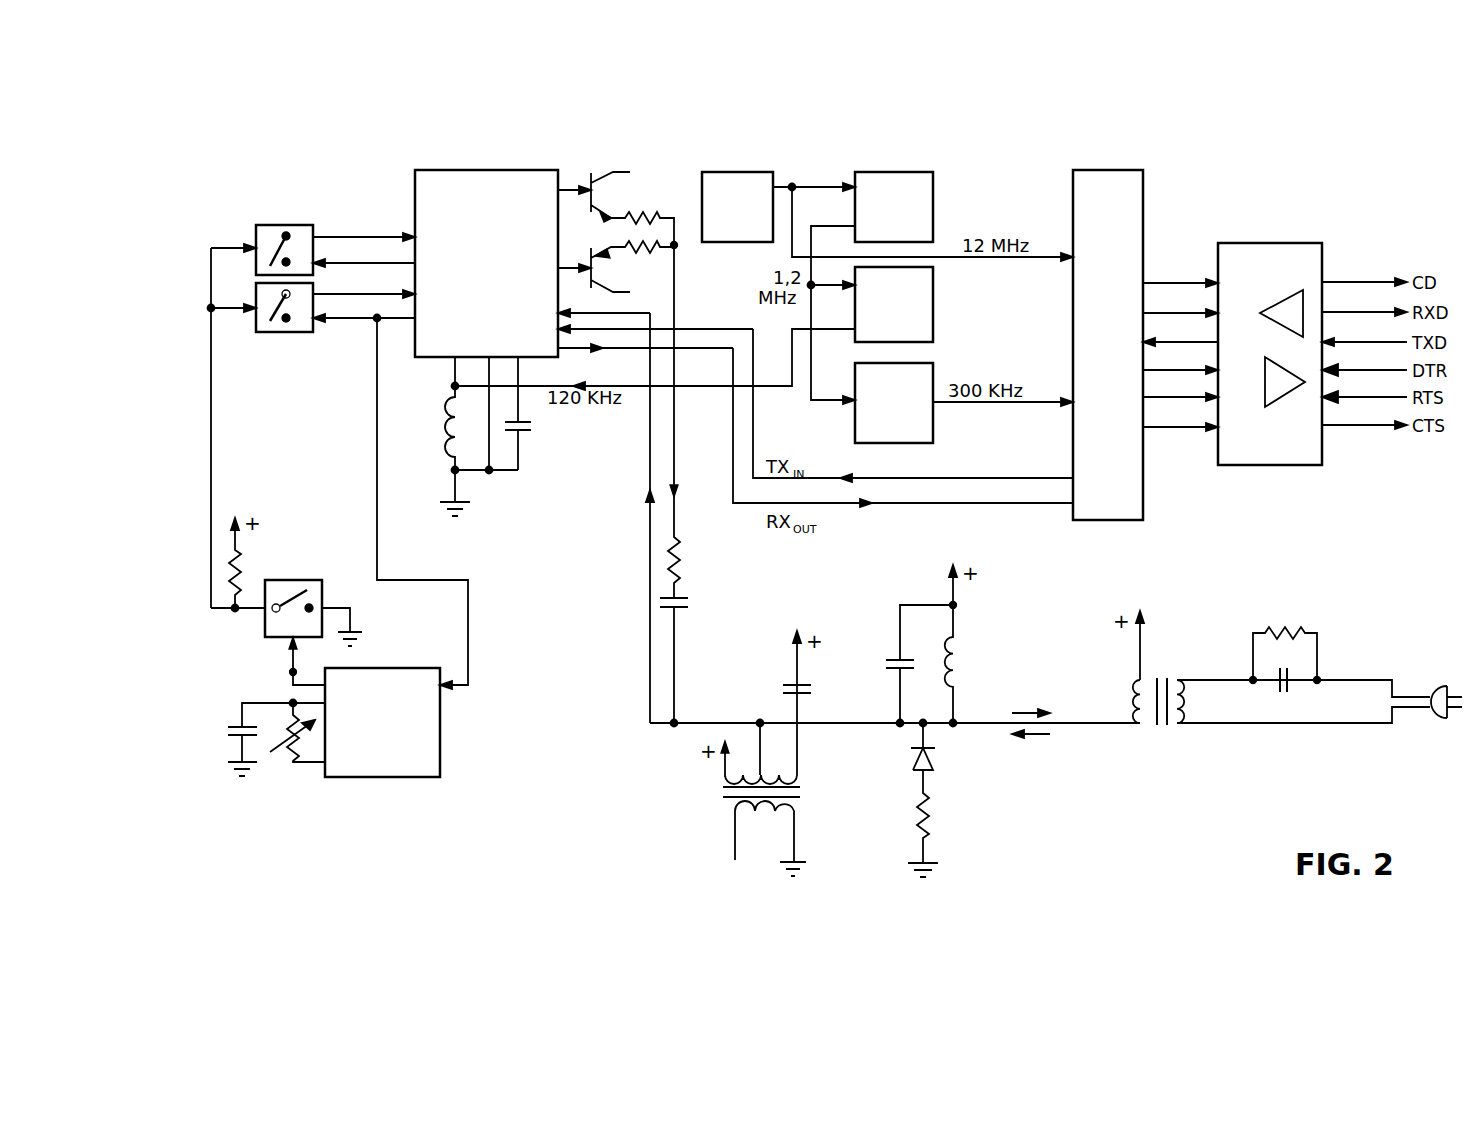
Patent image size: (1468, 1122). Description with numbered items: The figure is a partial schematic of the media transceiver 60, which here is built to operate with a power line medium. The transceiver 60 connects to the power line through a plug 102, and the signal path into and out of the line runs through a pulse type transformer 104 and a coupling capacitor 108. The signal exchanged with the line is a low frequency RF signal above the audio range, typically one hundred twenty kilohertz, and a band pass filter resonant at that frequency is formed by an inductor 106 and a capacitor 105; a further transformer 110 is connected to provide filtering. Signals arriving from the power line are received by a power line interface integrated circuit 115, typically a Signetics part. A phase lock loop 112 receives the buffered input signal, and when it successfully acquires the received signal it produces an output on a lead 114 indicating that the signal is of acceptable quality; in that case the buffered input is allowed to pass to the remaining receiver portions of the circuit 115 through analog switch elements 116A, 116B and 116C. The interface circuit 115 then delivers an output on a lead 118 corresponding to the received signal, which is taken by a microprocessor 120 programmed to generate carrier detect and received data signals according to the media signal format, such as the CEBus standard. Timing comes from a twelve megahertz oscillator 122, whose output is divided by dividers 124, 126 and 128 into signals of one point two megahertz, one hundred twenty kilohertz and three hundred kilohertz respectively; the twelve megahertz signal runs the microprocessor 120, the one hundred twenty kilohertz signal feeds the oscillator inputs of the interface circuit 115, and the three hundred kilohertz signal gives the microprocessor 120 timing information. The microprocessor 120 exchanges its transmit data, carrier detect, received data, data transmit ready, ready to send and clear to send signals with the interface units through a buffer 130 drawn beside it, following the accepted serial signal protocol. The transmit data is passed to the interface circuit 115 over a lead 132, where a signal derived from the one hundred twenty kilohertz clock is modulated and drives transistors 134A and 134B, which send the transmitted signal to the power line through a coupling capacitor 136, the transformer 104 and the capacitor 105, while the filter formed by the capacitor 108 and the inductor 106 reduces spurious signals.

The media transceiver 60 is at (1054, 790).
The plug 102 is at (1436, 722).
The pulse type transformer 104 is at (1165, 674).
The capacitor 105 is at (1285, 695).
The inductor 106 is at (960, 660).
The coupling capacitor 108 is at (885, 663).
The transformer 110 is at (718, 795).
The phase lock loop 112 is at (440, 732).
The lead 114 is at (292, 672).
The power line interface integrated circuit 115 is at (448, 170).
The analog switch element 116A is at (255, 237).
The analog switch element 116B is at (255, 294).
The analog switch element 116C is at (265, 628).
The lead 118 is at (955, 503).
The microprocessor 120 is at (1080, 170).
The 12 MHz oscillator 122 is at (705, 172).
The divider 124 is at (860, 172).
The divider 126 is at (933, 283).
The divider 128 is at (933, 421).
The 145406 buffer 130 is at (1232, 243).
The lead 132 is at (955, 478).
The drive transistor 134A is at (665, 202).
The drive transistor 134B is at (665, 279).
The coupling capacitor 136 is at (690, 603).